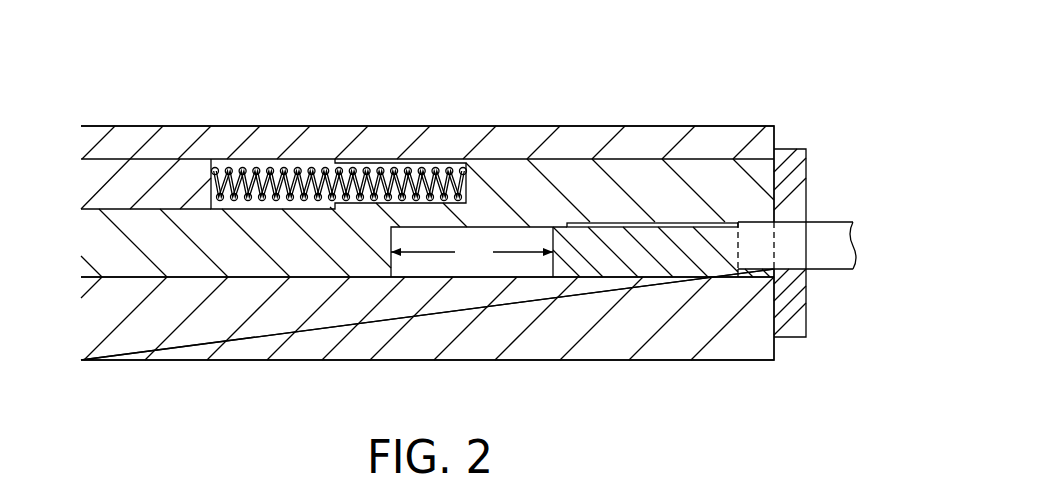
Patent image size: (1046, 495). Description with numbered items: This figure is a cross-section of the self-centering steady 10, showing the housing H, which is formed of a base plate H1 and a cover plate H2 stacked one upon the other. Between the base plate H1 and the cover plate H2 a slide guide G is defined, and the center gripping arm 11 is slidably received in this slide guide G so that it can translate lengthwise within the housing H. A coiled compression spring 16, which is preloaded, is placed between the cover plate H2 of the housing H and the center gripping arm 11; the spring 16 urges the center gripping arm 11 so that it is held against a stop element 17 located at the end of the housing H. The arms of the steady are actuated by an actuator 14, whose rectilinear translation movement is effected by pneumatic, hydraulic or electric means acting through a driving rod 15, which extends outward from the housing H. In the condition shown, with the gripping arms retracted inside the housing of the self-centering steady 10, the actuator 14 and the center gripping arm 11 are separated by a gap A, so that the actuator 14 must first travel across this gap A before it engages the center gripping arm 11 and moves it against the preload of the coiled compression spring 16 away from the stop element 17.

The self-centering steady 10 is at (538, 48).
The center gripping arm 11 is at (173, 260).
The actuator 14 is at (650, 263).
The driving rod 15 is at (823, 252).
The coiled compression spring 16 is at (280, 167).
The stop element 17 is at (798, 190).
The housing H is at (622, 125).
The base plate H1 is at (483, 325).
The cover plate H2 is at (420, 128).
The slide guide G is at (338, 280).
The gap A is at (479, 252).